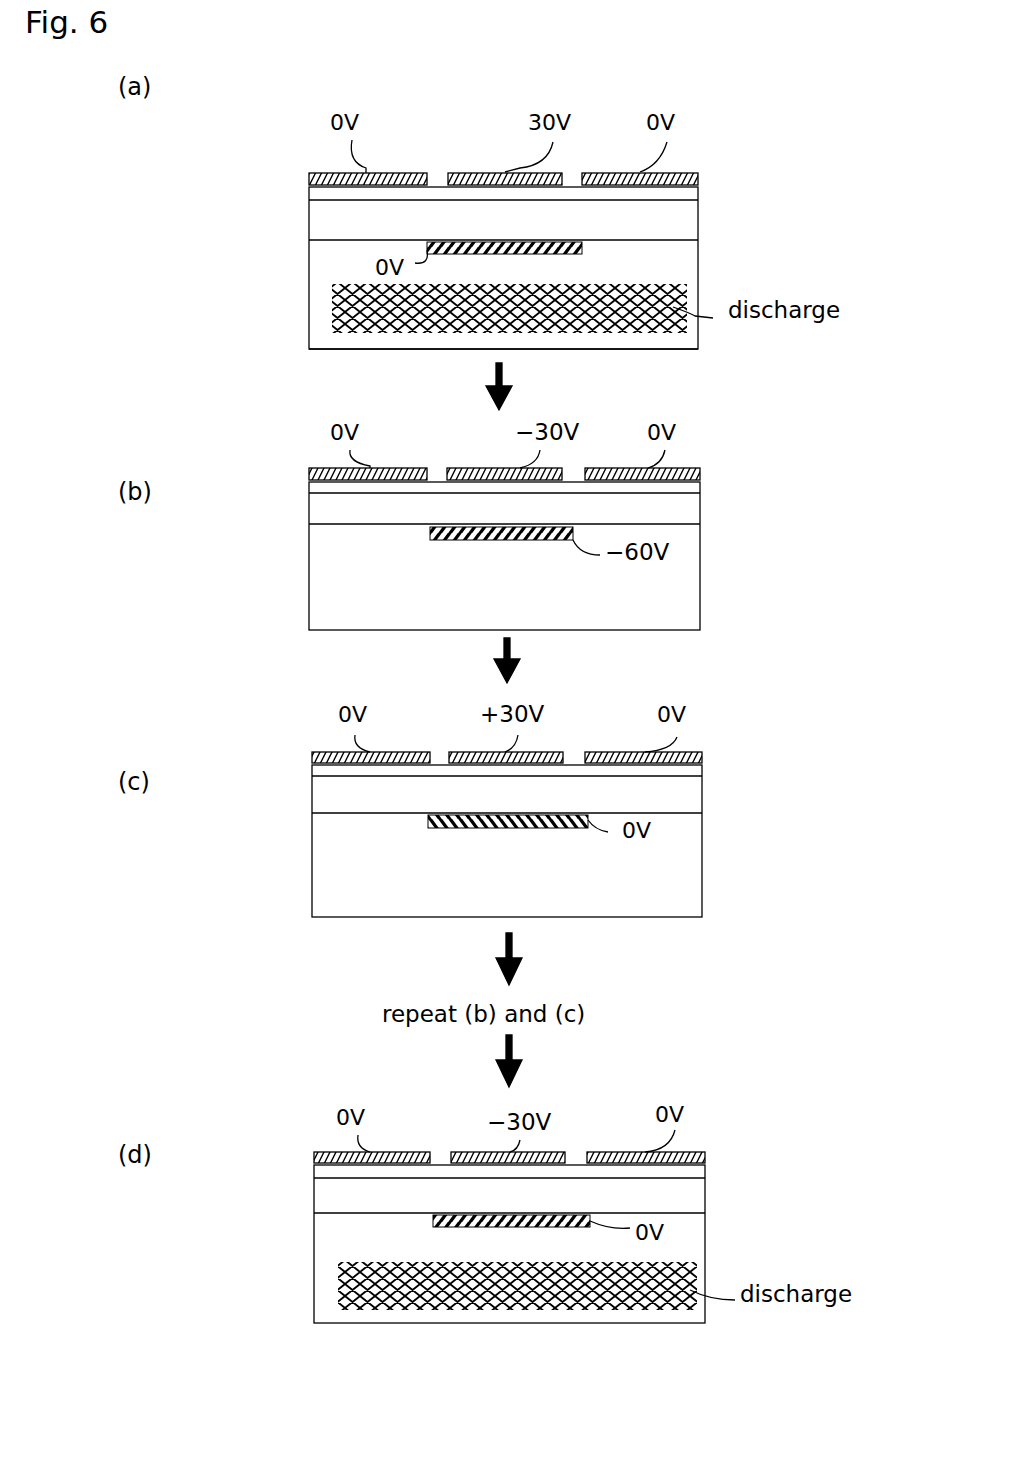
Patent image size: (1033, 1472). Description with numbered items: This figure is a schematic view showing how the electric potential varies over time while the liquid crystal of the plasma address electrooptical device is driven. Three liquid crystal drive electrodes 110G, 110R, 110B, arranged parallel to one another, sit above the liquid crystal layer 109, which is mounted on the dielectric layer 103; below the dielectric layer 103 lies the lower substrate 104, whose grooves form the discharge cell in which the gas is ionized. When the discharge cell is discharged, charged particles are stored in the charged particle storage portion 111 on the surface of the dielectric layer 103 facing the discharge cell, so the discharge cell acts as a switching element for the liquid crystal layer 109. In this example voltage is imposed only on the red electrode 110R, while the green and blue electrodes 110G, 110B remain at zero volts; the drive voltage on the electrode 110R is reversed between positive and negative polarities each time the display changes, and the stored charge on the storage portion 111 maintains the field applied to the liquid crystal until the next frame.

The liquid crystal drive electrode 110G is at (330, 173).
The liquid crystal drive electrode 110R is at (510, 171).
The liquid crystal drive electrode 110B is at (755, 162).
The liquid crystal layer 109 is at (323, 193).
The dielectric layer 103 is at (343, 224).
The lower substrate 104 is at (323, 335).
The charged particle storage portion 111 is at (582, 248).